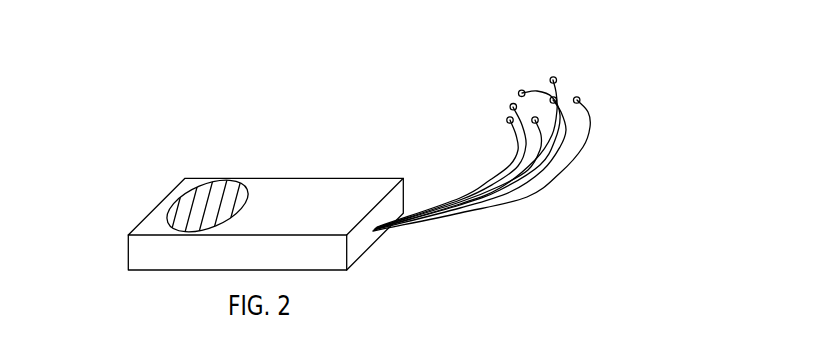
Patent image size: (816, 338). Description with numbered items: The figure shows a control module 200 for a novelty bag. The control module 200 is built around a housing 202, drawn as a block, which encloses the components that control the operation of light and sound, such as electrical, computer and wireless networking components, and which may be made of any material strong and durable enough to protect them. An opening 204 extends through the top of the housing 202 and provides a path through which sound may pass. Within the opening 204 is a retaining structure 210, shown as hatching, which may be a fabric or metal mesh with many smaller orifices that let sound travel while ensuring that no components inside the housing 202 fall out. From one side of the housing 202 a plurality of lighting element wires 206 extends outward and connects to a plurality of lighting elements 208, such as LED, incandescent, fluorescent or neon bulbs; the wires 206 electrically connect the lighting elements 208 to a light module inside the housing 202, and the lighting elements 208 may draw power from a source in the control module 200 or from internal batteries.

The control module 200 is at (166, 130).
The housing 202 is at (337, 183).
The opening 204 is at (229, 181).
The lighting element wires 206 is at (511, 192).
The lighting elements 208 is at (518, 92).
The retaining structure 210 is at (193, 207).